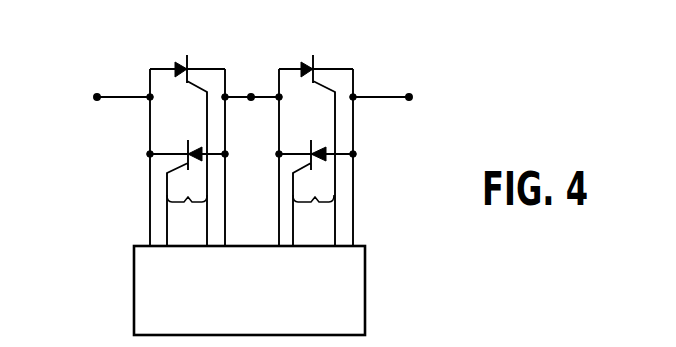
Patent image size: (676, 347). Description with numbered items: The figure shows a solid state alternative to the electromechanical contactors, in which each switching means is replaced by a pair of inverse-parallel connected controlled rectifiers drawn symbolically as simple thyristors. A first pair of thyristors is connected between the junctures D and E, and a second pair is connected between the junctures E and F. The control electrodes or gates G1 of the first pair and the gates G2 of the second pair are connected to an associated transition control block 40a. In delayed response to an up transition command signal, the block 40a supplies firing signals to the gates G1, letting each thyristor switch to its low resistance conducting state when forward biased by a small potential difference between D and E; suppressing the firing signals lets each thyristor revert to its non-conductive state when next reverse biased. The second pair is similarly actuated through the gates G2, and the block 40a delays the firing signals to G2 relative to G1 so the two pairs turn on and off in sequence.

The juncture D is at (90, 86).
The juncture E is at (253, 87).
The juncture F is at (407, 84).
The gates of the first pair of thyristors G1 is at (187, 211).
The gates of the second pair of thyristors G2 is at (313, 212).
The transition control block 40a is at (134, 249).